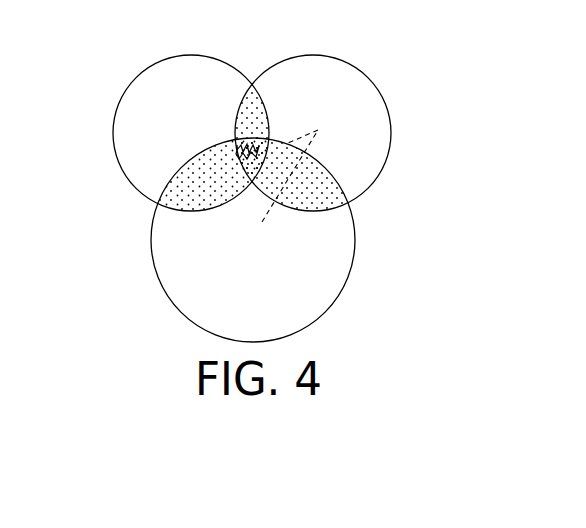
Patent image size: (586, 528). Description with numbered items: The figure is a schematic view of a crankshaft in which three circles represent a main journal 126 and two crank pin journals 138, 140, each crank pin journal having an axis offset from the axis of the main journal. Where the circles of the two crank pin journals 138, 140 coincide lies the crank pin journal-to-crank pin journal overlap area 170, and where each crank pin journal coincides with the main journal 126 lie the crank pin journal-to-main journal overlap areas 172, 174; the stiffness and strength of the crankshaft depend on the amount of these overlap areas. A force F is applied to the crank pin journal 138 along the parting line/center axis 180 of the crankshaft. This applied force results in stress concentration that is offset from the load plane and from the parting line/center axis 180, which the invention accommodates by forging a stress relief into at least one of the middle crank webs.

The main journal 126 is at (355, 260).
The crank pin journal 138 is at (390, 133).
The crank pin journal 140 is at (117, 155).
The crank pin journal-to-crank pin journal overlap area 170 is at (266, 105).
The crank pin journal-to-main journal overlap area 172 is at (302, 203).
The crank pin journal-to-main journal overlap area 174 is at (213, 203).
The parting line/center axis 180 is at (268, 212).
The force F is at (363, 68).